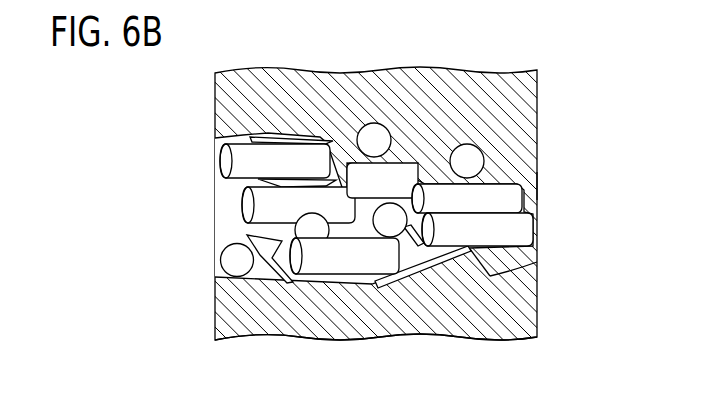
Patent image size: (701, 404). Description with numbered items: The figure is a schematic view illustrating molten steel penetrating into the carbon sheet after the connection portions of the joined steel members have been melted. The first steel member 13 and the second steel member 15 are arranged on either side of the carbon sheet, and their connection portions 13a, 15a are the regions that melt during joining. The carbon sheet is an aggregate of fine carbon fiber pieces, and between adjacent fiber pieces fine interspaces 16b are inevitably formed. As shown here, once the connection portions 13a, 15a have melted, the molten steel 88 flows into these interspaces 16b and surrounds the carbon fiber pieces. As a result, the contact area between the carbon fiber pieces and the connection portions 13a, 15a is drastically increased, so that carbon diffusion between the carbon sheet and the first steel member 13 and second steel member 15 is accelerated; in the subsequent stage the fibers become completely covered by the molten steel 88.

The first steel member 13 is at (318, 324).
The connection portion 13a is at (538, 255).
The second steel member 15 is at (447, 82).
The connection portion 15a is at (518, 178).
The interspace 16b is at (245, 187).
The molten steel 88 is at (291, 182).